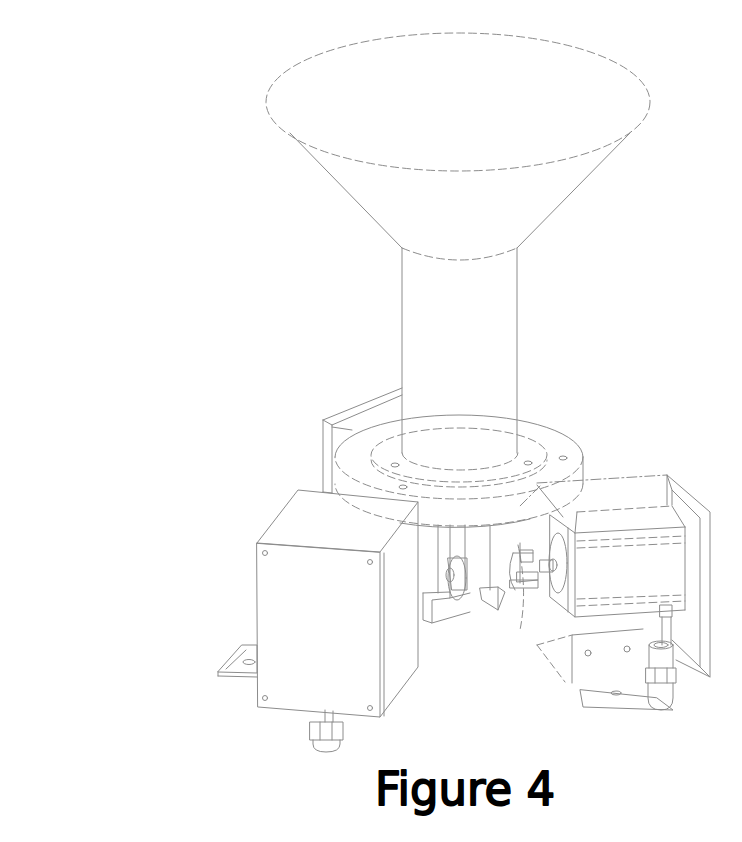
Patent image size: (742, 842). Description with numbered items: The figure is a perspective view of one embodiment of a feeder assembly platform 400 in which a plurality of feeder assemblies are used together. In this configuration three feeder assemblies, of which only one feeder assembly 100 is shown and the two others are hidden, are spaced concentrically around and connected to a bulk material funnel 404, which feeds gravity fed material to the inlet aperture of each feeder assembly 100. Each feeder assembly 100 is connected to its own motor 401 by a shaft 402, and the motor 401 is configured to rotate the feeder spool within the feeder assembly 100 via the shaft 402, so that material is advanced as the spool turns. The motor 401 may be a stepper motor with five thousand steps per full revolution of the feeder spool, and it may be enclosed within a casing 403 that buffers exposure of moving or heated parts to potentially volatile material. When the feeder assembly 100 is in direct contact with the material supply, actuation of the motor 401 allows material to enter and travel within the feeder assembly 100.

The feeder assembly platform 400 is at (157, 377).
The bulk material funnel 404 is at (493, 342).
The casing 403 is at (302, 573).
The feeder assembly 100 is at (477, 567).
The shaft 402 is at (530, 600).
The motor 401 is at (641, 507).